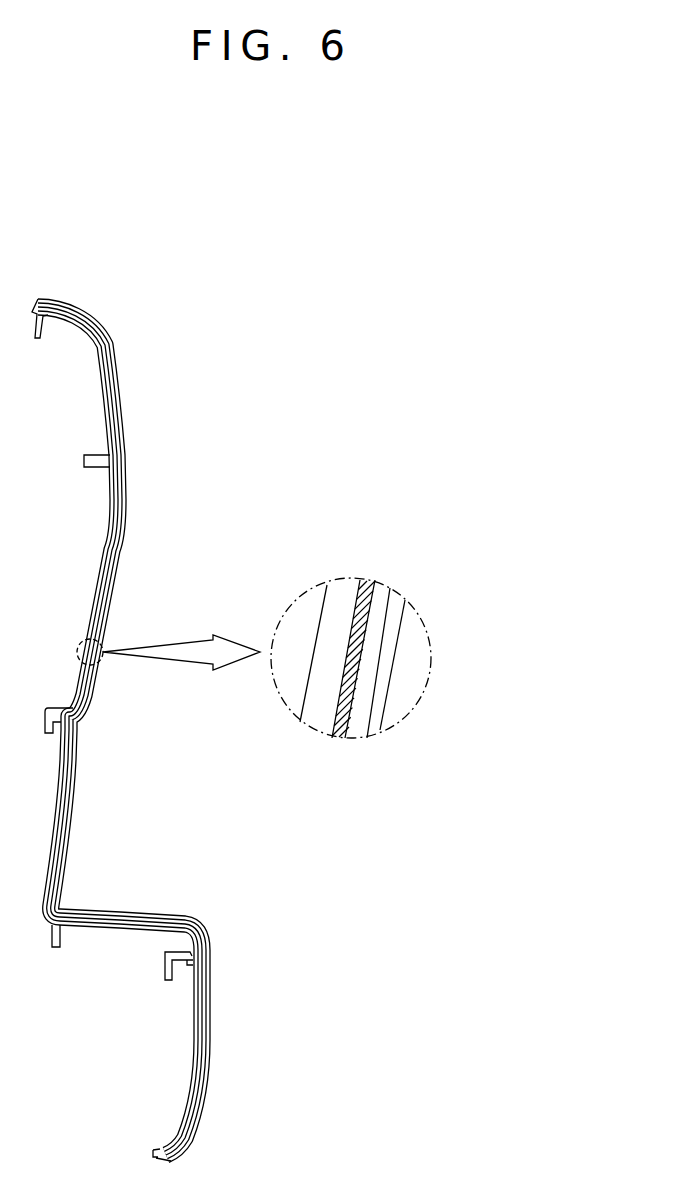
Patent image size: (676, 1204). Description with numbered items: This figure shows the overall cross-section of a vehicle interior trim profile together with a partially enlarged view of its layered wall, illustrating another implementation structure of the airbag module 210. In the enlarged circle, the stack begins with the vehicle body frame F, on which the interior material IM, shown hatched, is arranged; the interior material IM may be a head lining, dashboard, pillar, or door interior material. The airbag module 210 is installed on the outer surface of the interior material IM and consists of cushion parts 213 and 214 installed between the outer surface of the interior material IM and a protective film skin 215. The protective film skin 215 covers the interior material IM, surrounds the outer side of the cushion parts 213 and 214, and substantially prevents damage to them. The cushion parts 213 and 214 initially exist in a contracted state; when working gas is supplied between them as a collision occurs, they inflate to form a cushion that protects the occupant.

The airbag module 210 is at (460, 643).
The cushion part 213 is at (383, 637).
The cushion part 214 is at (358, 677).
The protective film skin 215 is at (528, 613).
The vehicle body frame F is at (342, 590).
The interior material IM is at (427, 623).